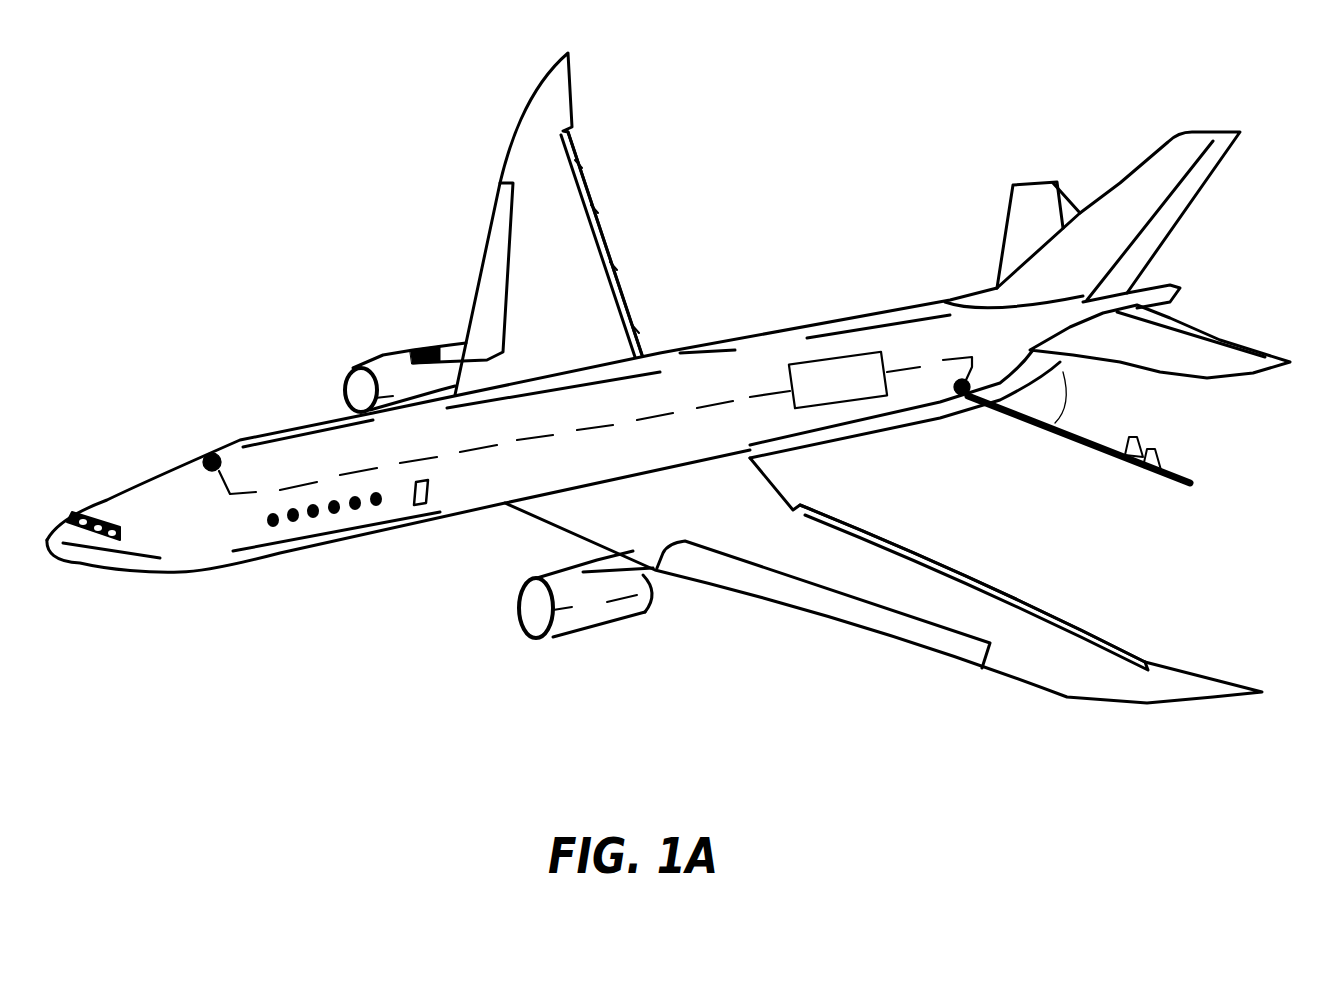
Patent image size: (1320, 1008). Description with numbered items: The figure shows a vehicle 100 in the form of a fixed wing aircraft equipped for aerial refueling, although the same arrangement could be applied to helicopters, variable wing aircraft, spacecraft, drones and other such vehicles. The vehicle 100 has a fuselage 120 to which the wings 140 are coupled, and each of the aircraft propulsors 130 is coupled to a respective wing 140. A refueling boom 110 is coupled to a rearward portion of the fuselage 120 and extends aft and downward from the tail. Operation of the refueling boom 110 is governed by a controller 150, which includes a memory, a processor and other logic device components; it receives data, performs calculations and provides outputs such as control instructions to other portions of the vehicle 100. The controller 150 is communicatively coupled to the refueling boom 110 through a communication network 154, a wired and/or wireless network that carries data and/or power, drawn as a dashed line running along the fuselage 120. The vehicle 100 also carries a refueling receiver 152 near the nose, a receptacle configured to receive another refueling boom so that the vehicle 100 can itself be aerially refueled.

The vehicle 100 is at (347, 233).
The refueling boom 110 is at (1100, 457).
The fuselage 120 is at (315, 498).
The aircraft propulsors 130 is at (386, 356).
The wings 140 is at (588, 232).
The controller 150 is at (838, 380).
The refueling receiver 152 is at (203, 460).
The communication network 154 is at (710, 407).